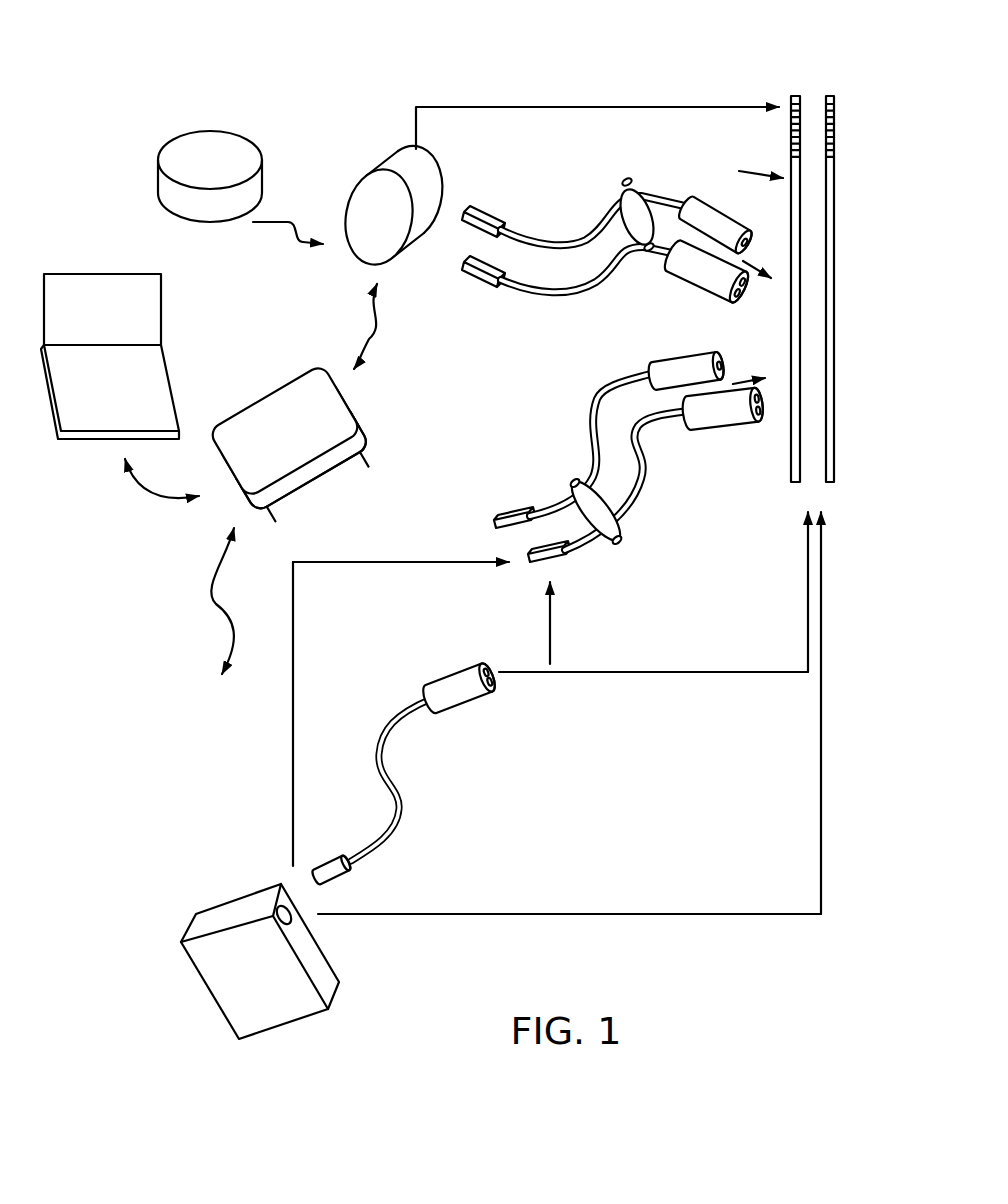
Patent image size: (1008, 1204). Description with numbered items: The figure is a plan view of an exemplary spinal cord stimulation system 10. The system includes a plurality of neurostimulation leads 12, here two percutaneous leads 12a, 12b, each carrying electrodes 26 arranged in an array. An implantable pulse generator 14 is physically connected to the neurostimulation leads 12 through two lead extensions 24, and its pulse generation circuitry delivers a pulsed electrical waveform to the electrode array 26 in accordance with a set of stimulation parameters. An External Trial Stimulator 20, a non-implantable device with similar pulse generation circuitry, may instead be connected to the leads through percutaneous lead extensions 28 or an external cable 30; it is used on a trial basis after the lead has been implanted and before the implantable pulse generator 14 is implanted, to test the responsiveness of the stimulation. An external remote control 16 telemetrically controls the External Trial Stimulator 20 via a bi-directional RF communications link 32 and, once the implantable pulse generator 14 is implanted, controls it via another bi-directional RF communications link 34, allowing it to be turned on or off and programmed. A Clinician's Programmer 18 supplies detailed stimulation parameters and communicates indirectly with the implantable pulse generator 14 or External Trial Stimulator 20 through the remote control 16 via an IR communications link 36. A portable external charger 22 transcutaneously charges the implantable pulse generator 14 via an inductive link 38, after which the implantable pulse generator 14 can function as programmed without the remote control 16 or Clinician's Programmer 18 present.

The SCS system 10 is at (577, 56).
The neurostimulation leads 12 is at (782, 260).
The neurostimulation lead 12a is at (800, 224).
The neurostimulation lead 12b is at (834, 269).
The implantable pulse generator 14 is at (377, 171).
The external remote control 16 is at (297, 400).
The Clinician's Programmer 18 is at (86, 288).
The External Trial Stimulator 20 is at (229, 912).
The external charger 22 is at (209, 142).
The lead extensions 24 is at (626, 182).
The electrodes 26 is at (834, 168).
The percutaneous lead extensions 28 is at (572, 490).
The external cable 30 is at (399, 713).
The bi-directional RF communications link 32 is at (230, 647).
The bi-directional RF communications link 34 is at (372, 341).
The IR communications link 36 is at (150, 494).
The inductive link 38 is at (266, 224).